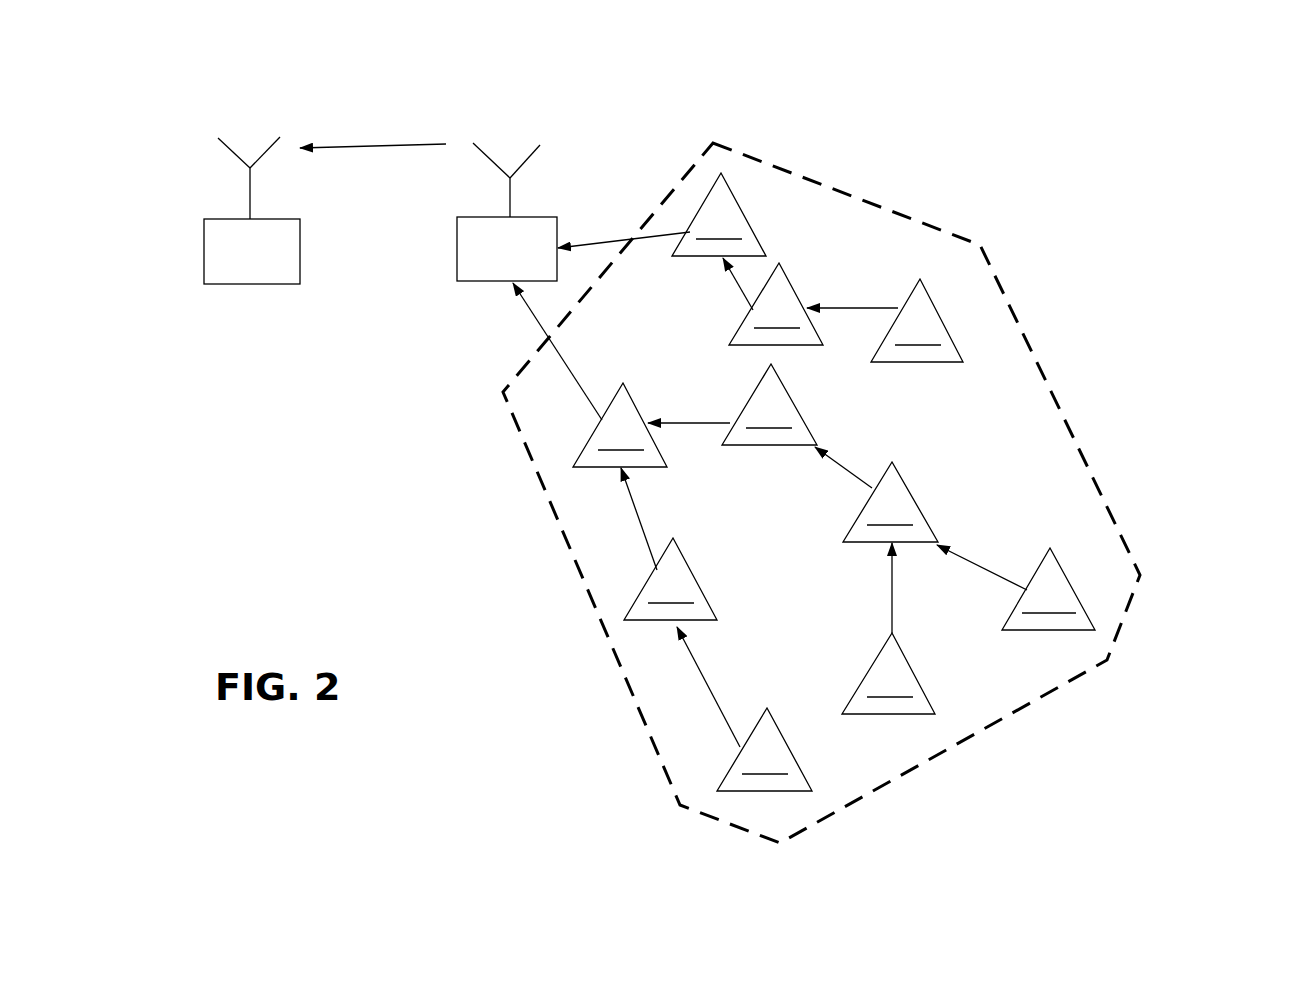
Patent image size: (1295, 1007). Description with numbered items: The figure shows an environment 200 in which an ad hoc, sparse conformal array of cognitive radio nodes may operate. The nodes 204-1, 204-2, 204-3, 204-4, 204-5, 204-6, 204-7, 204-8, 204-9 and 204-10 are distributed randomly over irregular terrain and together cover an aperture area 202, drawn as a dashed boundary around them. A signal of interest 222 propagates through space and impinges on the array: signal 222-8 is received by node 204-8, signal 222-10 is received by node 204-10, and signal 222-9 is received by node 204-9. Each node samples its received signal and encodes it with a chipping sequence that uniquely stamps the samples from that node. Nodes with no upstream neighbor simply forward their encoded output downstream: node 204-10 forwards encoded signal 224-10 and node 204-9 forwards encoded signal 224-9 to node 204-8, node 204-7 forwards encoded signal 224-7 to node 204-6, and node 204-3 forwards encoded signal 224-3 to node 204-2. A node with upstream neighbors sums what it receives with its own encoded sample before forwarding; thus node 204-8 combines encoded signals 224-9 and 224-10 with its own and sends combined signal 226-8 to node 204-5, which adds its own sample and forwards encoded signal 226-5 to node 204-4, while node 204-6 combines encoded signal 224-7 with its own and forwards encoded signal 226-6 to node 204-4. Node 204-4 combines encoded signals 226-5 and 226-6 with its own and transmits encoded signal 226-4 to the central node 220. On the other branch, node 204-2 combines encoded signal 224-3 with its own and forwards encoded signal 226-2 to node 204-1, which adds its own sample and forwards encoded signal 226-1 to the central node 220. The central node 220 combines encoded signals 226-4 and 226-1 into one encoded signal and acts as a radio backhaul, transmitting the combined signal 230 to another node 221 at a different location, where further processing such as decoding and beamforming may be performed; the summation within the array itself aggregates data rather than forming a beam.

The environment 200 is at (1053, 128).
The aperture area 202 is at (1060, 418).
The radio node 204-1 is at (719, 214).
The radio node 204-2 is at (776, 304).
The radio node 204-3 is at (917, 320).
The radio node 204-4 is at (620, 425).
The radio node 204-5 is at (769, 404).
The radio node 204-6 is at (670, 579).
The radio node 204-7 is at (764, 749).
The radio node 204-8 is at (890, 502).
The radio node 204-9 is at (888, 673).
The radio node 204-10 is at (1048, 589).
The central node 220 is at (457, 253).
The node 221 is at (203, 255).
The signal 222 is at (1267, 212).
The signal 222-8 is at (982, 428).
The signal 222-9 is at (980, 600).
The signal 222-10 is at (1077, 567).
The encoded signal 224-3 is at (858, 308).
The encoded signal 224-7 is at (705, 683).
The encoded signal 224-9 is at (892, 607).
The encoded signal 224-10 is at (977, 562).
The encoded signal 226-1 is at (660, 233).
The encoded signal 226-2 is at (742, 296).
The encoded signal 226-4 is at (533, 320).
The encoded signal 226-5 is at (688, 422).
The encoded signal 226-6 is at (630, 500).
The combined signal 226-8 is at (848, 472).
The combined signal 230 is at (396, 140).